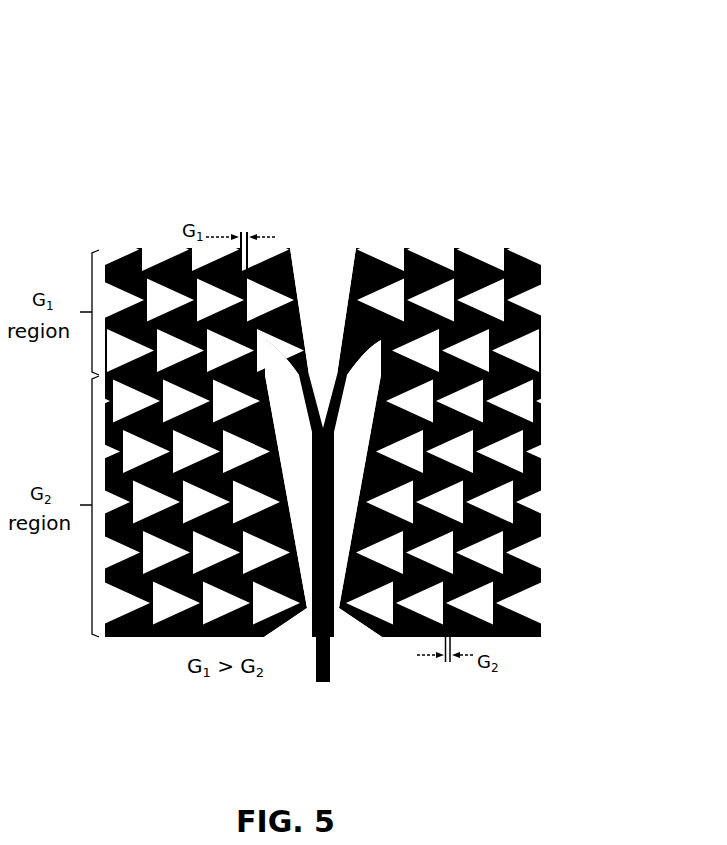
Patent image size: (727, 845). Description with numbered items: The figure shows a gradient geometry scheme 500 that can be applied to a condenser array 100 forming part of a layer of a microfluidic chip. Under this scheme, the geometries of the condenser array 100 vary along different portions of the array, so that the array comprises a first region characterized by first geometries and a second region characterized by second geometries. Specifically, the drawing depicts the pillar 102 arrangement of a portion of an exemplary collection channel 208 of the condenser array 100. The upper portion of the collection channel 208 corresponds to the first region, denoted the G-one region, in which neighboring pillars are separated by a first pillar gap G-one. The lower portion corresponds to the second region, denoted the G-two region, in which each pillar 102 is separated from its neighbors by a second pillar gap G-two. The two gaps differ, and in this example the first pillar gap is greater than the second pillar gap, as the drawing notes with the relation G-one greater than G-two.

The gradient geometry scheme 500 is at (313, 348).
The condenser array 100 is at (313, 422).
The collection channel 208 is at (269, 206).
The pillar 102 is at (494, 296).